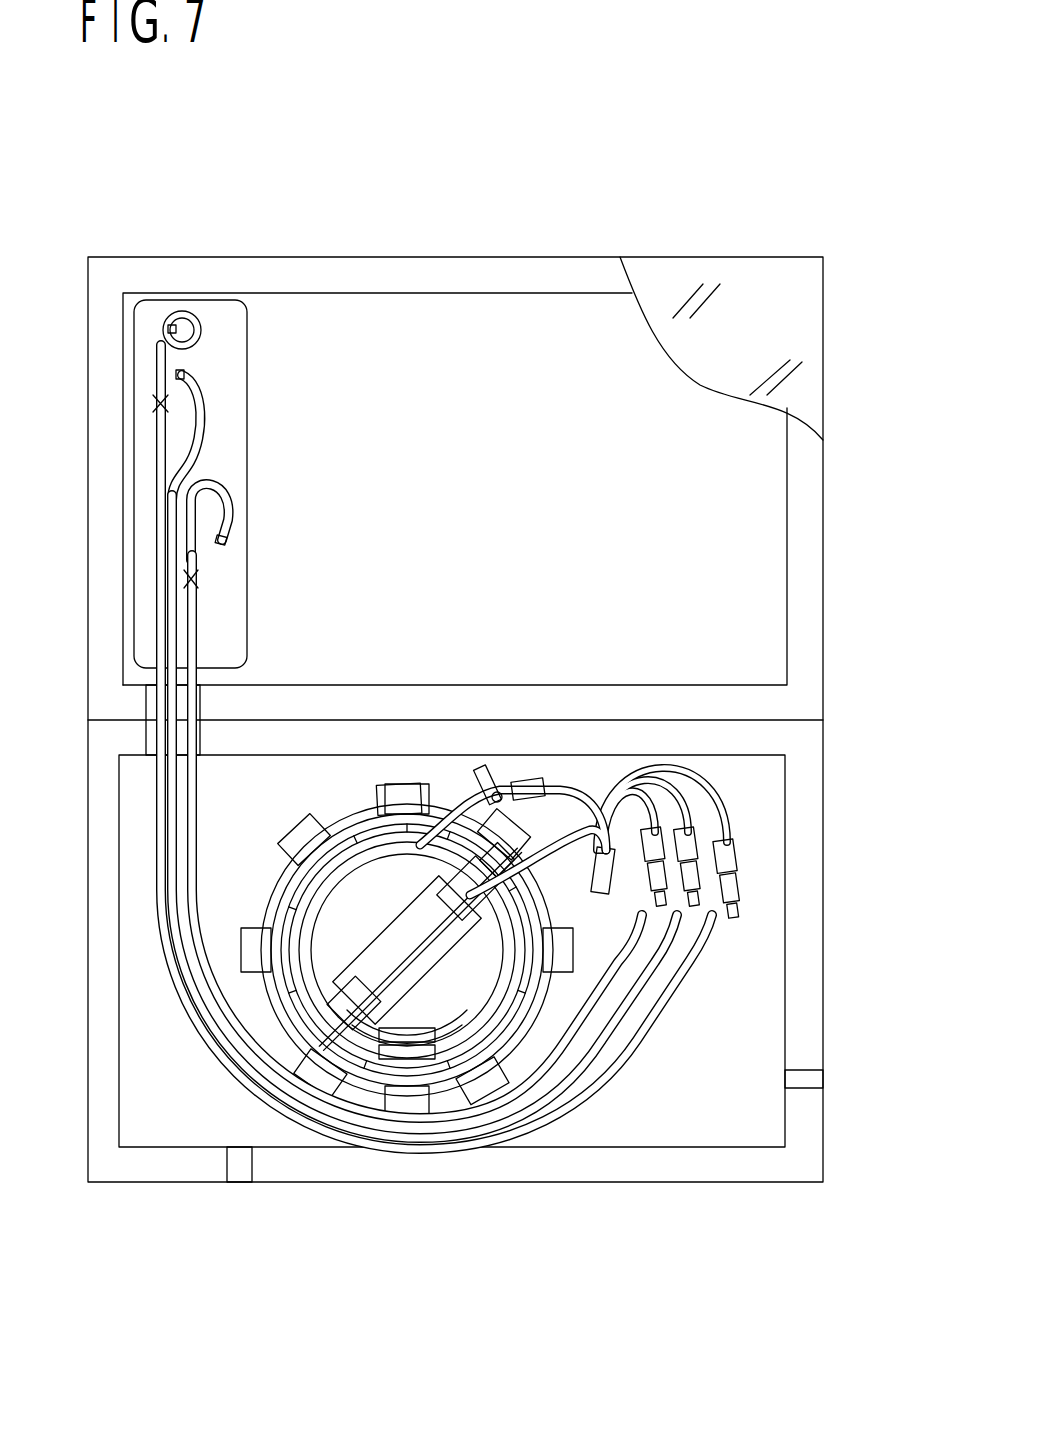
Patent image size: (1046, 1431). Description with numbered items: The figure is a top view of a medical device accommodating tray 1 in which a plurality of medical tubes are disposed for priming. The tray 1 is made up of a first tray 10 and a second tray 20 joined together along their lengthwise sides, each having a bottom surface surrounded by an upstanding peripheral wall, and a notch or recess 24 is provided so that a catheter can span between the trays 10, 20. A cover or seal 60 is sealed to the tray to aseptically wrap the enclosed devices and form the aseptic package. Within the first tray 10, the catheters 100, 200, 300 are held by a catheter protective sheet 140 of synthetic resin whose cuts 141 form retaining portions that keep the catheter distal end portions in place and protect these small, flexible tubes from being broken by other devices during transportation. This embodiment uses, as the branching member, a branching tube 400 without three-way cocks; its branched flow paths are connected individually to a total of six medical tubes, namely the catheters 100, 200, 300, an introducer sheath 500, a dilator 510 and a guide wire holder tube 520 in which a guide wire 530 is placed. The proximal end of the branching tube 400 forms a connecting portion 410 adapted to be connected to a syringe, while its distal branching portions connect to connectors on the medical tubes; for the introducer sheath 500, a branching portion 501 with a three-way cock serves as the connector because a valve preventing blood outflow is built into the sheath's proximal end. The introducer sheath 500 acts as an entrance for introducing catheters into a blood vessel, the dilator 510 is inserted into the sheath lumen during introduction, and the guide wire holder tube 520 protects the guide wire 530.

The tray 1 is at (357, 164).
The first tray 10 is at (490, 257).
The second tray 20 is at (750, 1182).
The notch or recess 24 is at (205, 740).
The cover or seal 60 is at (738, 257).
The catheter 100 is at (202, 328).
The catheter protective sheet 140 is at (247, 626).
The cuts 141 is at (218, 580).
The catheter 200 is at (212, 404).
The catheter 300 is at (230, 500).
The branching tube 400 is at (630, 770).
The connecting portion 410 is at (640, 890).
The introducer sheath 500 is at (375, 1080).
The branching portion with a three-way cock 501 is at (470, 780).
The dilator 510 is at (442, 1000).
The guide wire holder tube 520 is at (510, 1020).
The guide wire 530 is at (540, 860).